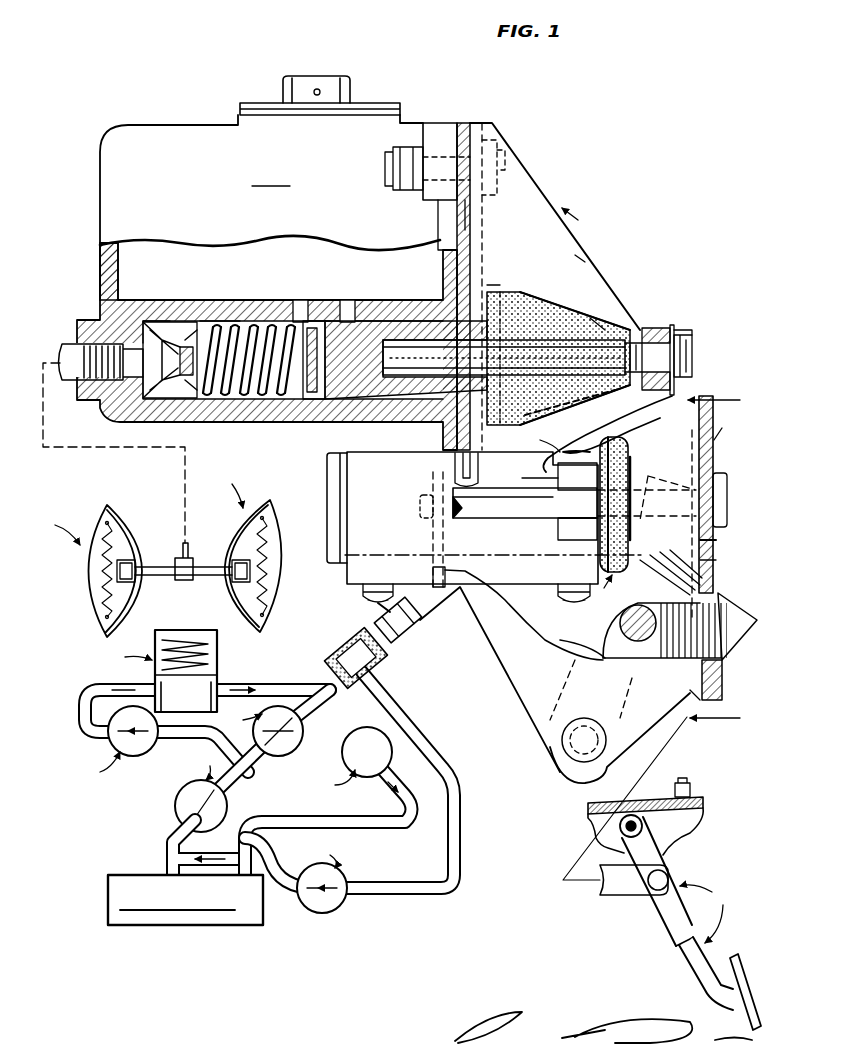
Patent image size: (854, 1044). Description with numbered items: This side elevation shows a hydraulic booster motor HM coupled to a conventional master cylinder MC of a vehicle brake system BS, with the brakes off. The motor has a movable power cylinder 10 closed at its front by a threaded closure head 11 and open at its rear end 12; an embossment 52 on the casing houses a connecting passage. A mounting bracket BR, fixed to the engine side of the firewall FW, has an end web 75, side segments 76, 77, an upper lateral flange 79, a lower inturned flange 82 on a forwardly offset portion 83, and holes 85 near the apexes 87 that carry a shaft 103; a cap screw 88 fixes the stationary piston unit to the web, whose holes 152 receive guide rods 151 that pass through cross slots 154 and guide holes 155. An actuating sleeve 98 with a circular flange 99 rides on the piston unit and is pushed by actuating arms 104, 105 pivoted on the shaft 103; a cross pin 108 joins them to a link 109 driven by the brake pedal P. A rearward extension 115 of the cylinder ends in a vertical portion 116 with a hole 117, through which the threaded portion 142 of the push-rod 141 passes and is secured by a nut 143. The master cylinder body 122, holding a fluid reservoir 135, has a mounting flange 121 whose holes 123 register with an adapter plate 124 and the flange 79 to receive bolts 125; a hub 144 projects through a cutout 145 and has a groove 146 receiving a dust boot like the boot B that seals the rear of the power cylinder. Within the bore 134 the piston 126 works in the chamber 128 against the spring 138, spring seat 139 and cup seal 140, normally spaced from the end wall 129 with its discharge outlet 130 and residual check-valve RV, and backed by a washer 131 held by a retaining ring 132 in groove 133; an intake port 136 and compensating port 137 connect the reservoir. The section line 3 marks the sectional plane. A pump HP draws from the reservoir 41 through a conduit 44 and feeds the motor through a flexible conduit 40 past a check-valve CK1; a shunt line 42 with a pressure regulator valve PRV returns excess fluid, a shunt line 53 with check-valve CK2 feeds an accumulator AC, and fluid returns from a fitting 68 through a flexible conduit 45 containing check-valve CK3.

The master cylinder body 122 is at (120, 145).
The fluid reservoir 135 is at (246, 242).
The master cylinder MC is at (271, 177).
The mounting flange 121 is at (437, 140).
The holes 123 is at (460, 170).
The upper outstanding lateral flange 79 is at (482, 125).
The bolts 125 is at (390, 168).
The adapter plate 124 is at (470, 212).
The mounting bracket BR is at (581, 218).
The side segment 77 is at (585, 262).
The power cylinder 10 is at (440, 442).
The compensating port 137 is at (295, 305).
The intake port 136 is at (347, 305).
The bore 134 is at (408, 318).
The cup-like seal 140 is at (305, 320).
The compression spring 138 is at (195, 322).
The forward end wall 129 is at (145, 323).
The discharge outlet 130 is at (88, 345).
The residual pressure check-valve RV is at (187, 400).
The pressure working chamber 128 is at (242, 398).
The spring seat 139 is at (312, 400).
The piston 126 is at (352, 399).
The push-rod 141 is at (545, 328).
The backing washer 131 is at (510, 280).
The retaining ring 132 is at (528, 298).
The external annular groove 146 is at (494, 285).
The flexible dust excluding boot B is at (591, 323).
The internal annular groove 133 is at (540, 380).
The hub-like extension 144 is at (583, 382).
The vertically disposed portion 116 is at (650, 328).
The reduced diameter terminating portion 142 is at (676, 388).
The nut 143 is at (692, 357).
The horizontal hole 117 is at (684, 338).
The extension 115 is at (622, 420).
The firewall FW is at (723, 494).
The section line 3 is at (720, 561).
The end web 75 is at (716, 462).
The cap screw 88 is at (726, 490).
The holes 152 is at (718, 542).
The actuating arm 105 is at (718, 562).
The threaded closure head 11 is at (327, 475).
The housing portion 12 is at (560, 452).
The hydraulic booster motor HM is at (576, 498).
The cutout 145 is at (478, 473).
The lower inturned flange 82 is at (433, 480).
The guide holes 155 is at (420, 512).
The guide rod 151 is at (520, 518).
The horizontal cross slot 154 is at (565, 540).
The forwardly offset portion 83 is at (433, 580).
The embossment 52 is at (522, 590).
The circular flange 99 is at (627, 462).
The cross pin 108 is at (640, 604).
The actuating sleeve 98 is at (675, 535).
The link 109 is at (735, 605).
The actuating arm 104 is at (600, 655).
The side segment 76 is at (516, 705).
The aligned hole 85 is at (552, 736).
The shaft 103 is at (562, 748).
The apex 87 is at (568, 780).
The brake pedal P is at (674, 904).
The brake system BS is at (154, 552).
The shunt pressure line 53 is at (80, 708).
The accumulator AC is at (157, 671).
The spring-loaded check-valve CK2 is at (160, 745).
The check-valve CK1 is at (265, 748).
The pump HP is at (201, 792).
The conduit 44 is at (170, 840).
The pressure regulator valve PRV is at (328, 802).
The shunt pressure line 42 is at (385, 826).
The flexible return conduit 45 is at (380, 692).
The nut 68 is at (422, 625).
The flexible conduit 40 is at (336, 672).
The spring-loaded check-valve CK3 is at (296, 874).
The fluid supply reservoir 41 is at (135, 876).